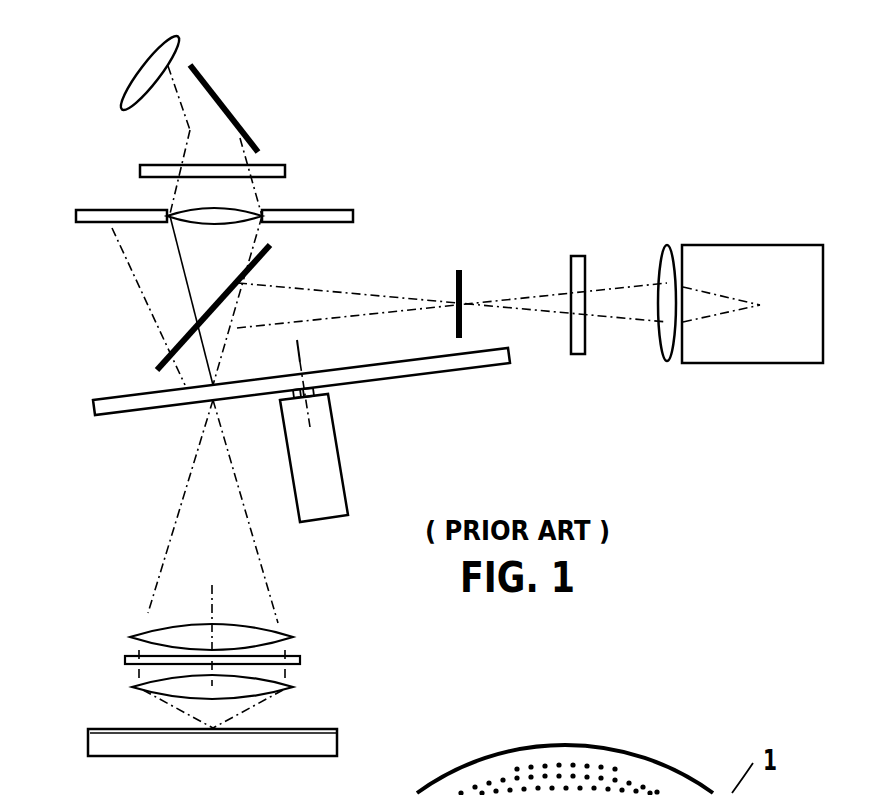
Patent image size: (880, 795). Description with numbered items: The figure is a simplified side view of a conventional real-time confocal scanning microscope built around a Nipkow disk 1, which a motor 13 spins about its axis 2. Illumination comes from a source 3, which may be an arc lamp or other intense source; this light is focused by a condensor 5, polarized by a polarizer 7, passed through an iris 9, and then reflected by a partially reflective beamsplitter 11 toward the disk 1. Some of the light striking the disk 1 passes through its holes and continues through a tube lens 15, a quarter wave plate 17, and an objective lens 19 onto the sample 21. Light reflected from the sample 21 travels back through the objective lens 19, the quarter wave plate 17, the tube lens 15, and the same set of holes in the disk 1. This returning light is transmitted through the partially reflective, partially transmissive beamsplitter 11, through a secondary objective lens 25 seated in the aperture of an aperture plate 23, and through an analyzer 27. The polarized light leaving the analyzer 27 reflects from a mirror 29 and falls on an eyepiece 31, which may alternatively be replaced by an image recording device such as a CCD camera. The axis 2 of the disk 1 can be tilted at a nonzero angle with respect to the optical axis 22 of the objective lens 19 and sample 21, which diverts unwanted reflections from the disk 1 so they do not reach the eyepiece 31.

The Nipkow disk 1 is at (136, 417).
The axis 2 is at (300, 352).
The source 3 is at (748, 245).
The condensor 5 is at (665, 362).
The polarizer 7 is at (574, 354).
The iris 9 is at (460, 270).
The partially reflective beamsplitter 11 is at (160, 363).
The motor 13 is at (327, 520).
The tube lens 15 is at (168, 625).
The quarter wave plate 17 is at (127, 658).
The objective lens 19 is at (287, 688).
The sample 21 is at (93, 752).
The optical axis 22 is at (212, 618).
The aperture plate 23 is at (92, 227).
The secondary objective lens 25 is at (177, 208).
The analyzer 27 is at (150, 163).
The mirror 29 is at (203, 77).
The eyepiece 31 is at (145, 57).